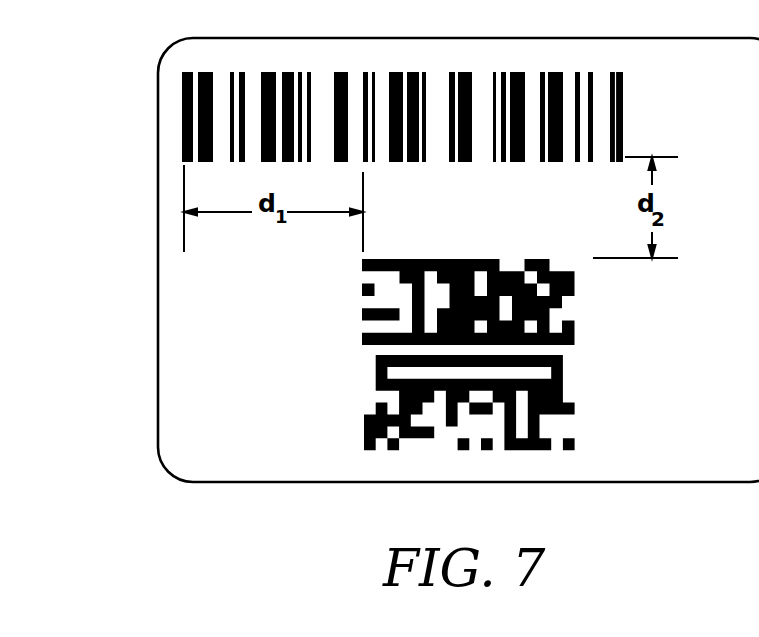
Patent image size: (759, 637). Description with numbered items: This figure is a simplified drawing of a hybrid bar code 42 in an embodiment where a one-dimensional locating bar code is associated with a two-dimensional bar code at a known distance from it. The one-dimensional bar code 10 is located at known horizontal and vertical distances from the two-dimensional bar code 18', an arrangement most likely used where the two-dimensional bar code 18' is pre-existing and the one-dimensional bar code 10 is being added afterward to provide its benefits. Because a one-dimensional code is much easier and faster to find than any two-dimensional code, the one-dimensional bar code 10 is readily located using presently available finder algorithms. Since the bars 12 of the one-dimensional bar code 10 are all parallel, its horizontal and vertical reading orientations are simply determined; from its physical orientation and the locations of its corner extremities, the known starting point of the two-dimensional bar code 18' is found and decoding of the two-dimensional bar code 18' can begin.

The 1D bar code 10 is at (634, 102).
The bars 12 is at (392, 170).
The hybrid bar code 42 is at (157, 295).
The 2D bar code 18' is at (391, 354).